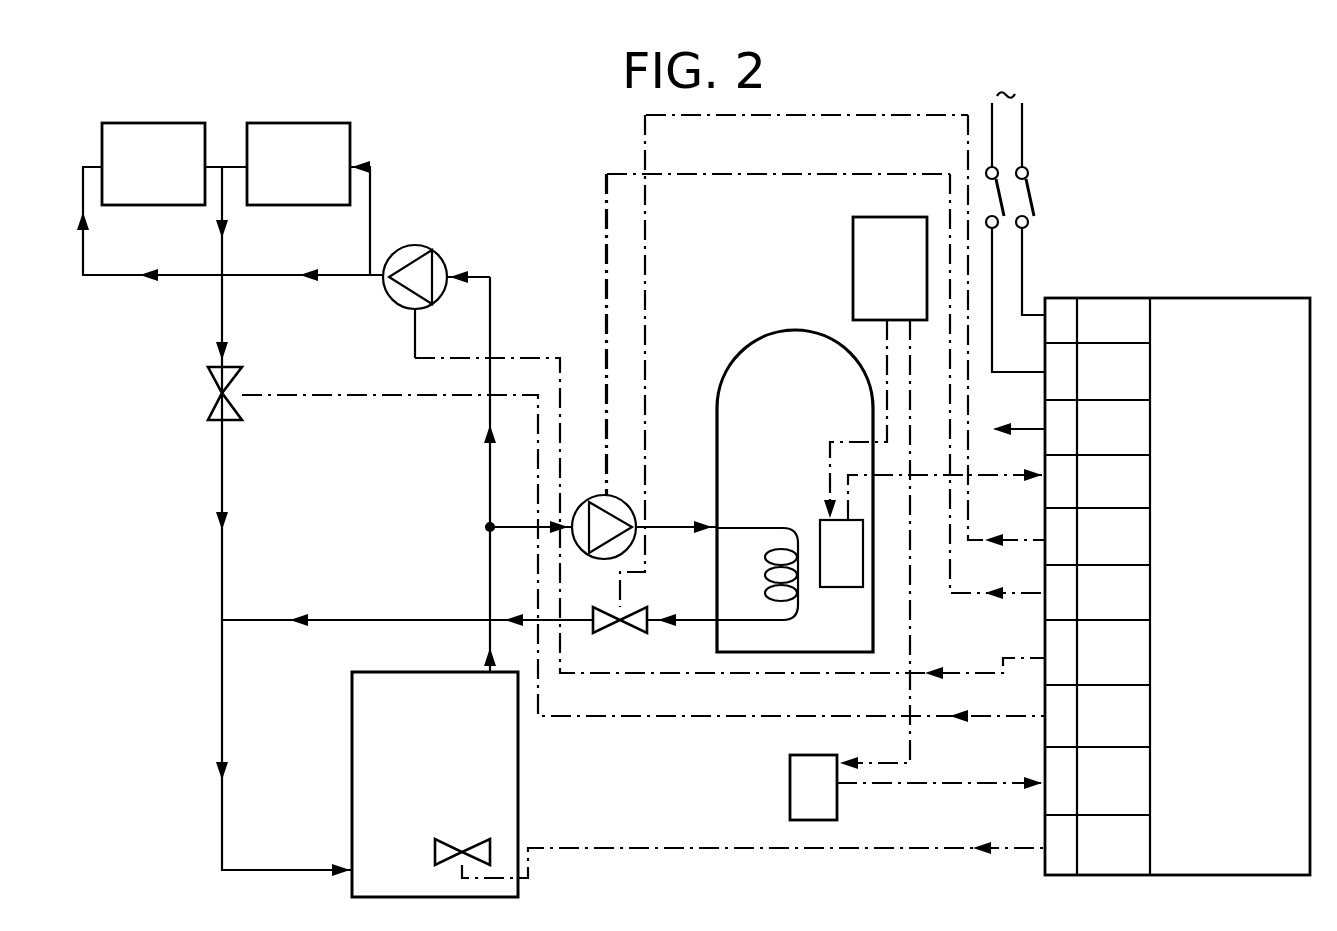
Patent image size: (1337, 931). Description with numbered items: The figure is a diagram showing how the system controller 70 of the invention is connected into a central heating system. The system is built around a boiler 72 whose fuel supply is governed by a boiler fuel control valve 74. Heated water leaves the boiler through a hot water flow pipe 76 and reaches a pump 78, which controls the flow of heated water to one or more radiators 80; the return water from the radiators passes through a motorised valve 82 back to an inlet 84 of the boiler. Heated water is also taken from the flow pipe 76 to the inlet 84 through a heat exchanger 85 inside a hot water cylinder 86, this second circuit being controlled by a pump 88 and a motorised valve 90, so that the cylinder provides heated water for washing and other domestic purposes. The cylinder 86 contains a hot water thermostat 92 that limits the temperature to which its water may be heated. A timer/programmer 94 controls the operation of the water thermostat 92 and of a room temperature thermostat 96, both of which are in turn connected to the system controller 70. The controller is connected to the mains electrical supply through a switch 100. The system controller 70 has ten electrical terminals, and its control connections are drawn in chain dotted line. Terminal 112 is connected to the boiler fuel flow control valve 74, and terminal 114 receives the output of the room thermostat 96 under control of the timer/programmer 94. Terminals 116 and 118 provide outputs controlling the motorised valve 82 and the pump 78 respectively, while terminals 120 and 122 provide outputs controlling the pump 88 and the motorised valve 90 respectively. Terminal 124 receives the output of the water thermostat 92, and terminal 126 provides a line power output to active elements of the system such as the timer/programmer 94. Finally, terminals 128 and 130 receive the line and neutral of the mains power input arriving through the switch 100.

The system controller 70 is at (1241, 610).
The boiler 72 is at (447, 764).
The boiler fuel control valve 74 is at (463, 840).
The hot water flow pipe 76 is at (490, 563).
The pump 78 is at (415, 245).
The radiators 80 is at (168, 183).
The motorised valve 82 is at (215, 389).
The inlet 84 is at (262, 870).
The heat exchanger 85 is at (765, 582).
The hot water cylinder 86 is at (752, 343).
The pump 88 is at (628, 501).
The motorised valve 90 is at (612, 634).
The hot water thermostat 92 is at (843, 585).
The timer/programmer 94 is at (905, 293).
The room temperature thermostat 96 is at (830, 805).
The switch 100 is at (1035, 198).
The terminal 112 is at (1134, 865).
The terminal 114 is at (1134, 801).
The terminal 116 is at (1134, 736).
The terminal 118 is at (1134, 673).
The terminal 120 is at (1134, 613).
The terminal 122 is at (1134, 557).
The terminal 124 is at (1134, 502).
The terminal 126 is at (1134, 448).
The terminal 128 is at (1134, 392).
The terminal 130 is at (1134, 340).